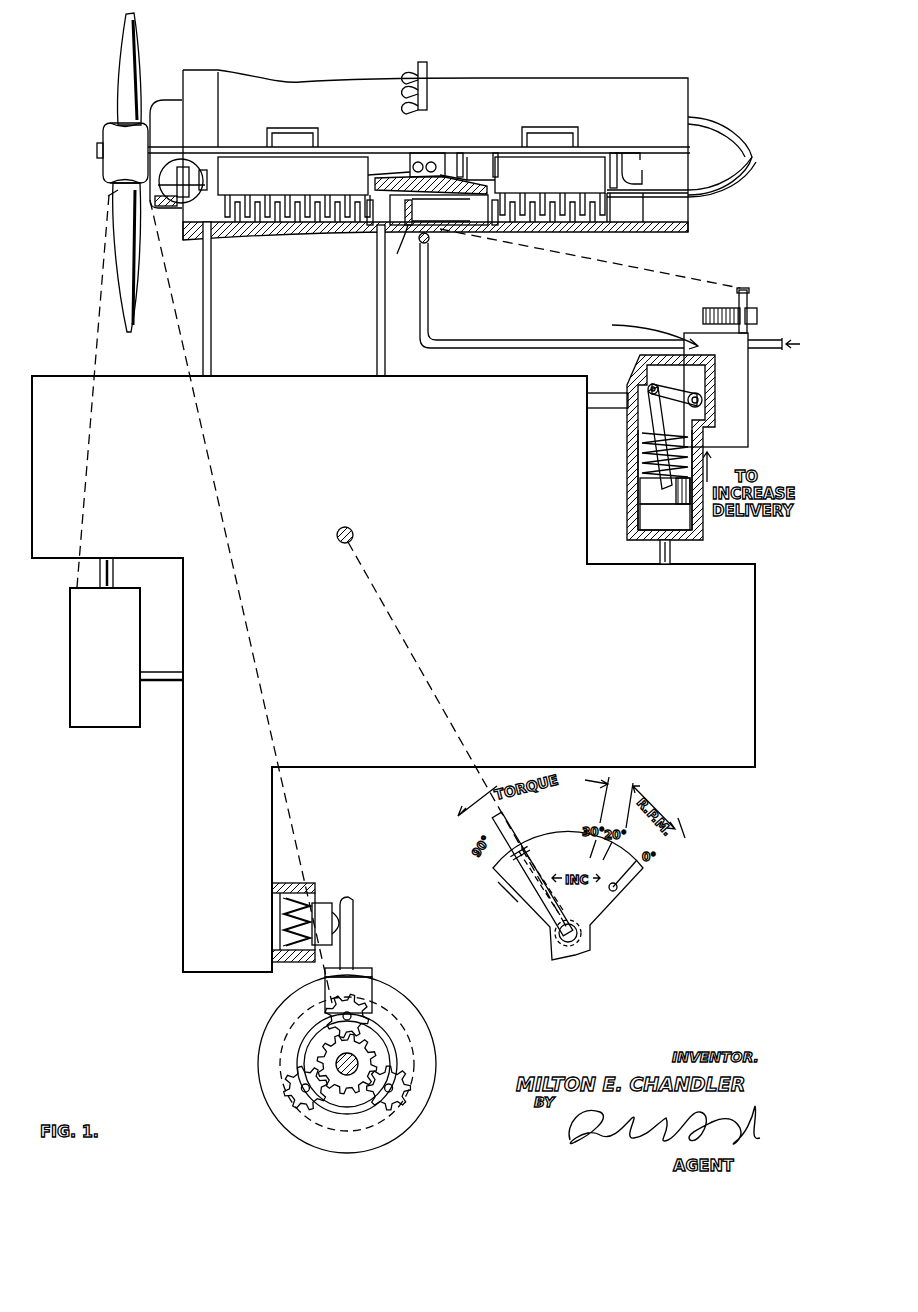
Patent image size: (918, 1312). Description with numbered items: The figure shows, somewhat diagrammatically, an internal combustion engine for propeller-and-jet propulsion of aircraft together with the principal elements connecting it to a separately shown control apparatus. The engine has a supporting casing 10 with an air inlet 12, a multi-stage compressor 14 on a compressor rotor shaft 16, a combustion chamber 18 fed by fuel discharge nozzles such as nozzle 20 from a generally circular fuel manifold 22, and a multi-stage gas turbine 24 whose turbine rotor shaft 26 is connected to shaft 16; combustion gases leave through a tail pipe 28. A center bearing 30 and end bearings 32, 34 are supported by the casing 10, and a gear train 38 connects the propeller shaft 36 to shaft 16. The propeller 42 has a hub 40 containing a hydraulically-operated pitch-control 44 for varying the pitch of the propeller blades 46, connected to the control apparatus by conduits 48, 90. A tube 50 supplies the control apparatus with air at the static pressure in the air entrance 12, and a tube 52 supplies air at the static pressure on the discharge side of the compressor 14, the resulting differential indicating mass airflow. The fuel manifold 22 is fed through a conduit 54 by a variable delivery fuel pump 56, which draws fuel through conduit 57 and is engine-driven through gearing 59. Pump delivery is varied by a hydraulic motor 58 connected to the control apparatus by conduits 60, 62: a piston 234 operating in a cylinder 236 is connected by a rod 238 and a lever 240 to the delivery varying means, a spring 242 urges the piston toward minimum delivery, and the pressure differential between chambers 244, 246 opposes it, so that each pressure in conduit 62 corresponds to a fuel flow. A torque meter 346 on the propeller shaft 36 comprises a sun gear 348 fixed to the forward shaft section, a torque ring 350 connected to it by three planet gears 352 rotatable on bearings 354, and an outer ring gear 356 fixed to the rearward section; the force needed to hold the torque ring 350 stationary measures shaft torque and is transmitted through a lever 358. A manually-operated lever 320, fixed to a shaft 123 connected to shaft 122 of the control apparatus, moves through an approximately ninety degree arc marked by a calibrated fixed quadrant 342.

The supporting casing 10 is at (288, 83).
The air inlet 12 is at (209, 220).
The multi-stage compressor 14 is at (316, 184).
The compressor rotor shaft 16 is at (352, 180).
The combustion chamber 18 is at (450, 220).
The fuel discharge nozzle 20 is at (407, 233).
The fuel manifold 22 is at (428, 92).
The multi-stage gas turbine 24 is at (523, 185).
The turbine rotor shaft 26 is at (562, 180).
The tail pipe 28 is at (668, 210).
The center bearing 30 is at (410, 160).
The end bearing 32 is at (642, 170).
The end bearing 34 is at (206, 179).
The propeller shaft 36 is at (176, 130).
The gear train 38 is at (168, 206).
The hub 40 is at (116, 163).
The propeller 42 is at (106, 205).
The pitch-control 44 is at (70, 628).
The propeller blades 46 is at (118, 90).
The conduit 48 is at (145, 672).
The tube 50 is at (211, 280).
The tube 52 is at (377, 280).
The conduit 54 is at (428, 280).
The variable delivery fuel pump 56 is at (754, 396).
The conduit 57 is at (766, 333).
The hydraulic motor 58 is at (626, 516).
The gearing 59 is at (720, 308).
The conduit 60 is at (622, 392).
The conduit 62 is at (670, 552).
The conduit 90 is at (113, 574).
The shaft 122 is at (354, 537).
The shaft 123 is at (581, 935).
The piston 234 is at (676, 502).
The cylinder 236 is at (640, 492).
The rod 238 is at (652, 402).
The lever 240 is at (700, 394).
The spring 242 is at (646, 455).
The chamber 244 is at (676, 526).
The chamber 246 is at (680, 382).
The manually-operated lever 320 is at (508, 822).
The calibrated fixed quadrant 342 is at (620, 894).
The torque meter 346 is at (251, 1027).
The sun gear 348 is at (370, 1058).
The torque ring 350 is at (396, 1036).
The planet gears 352 is at (368, 1009).
The bearings 354 is at (351, 1013).
The outer ring gear 356 is at (259, 1056).
The lever 358 is at (353, 935).